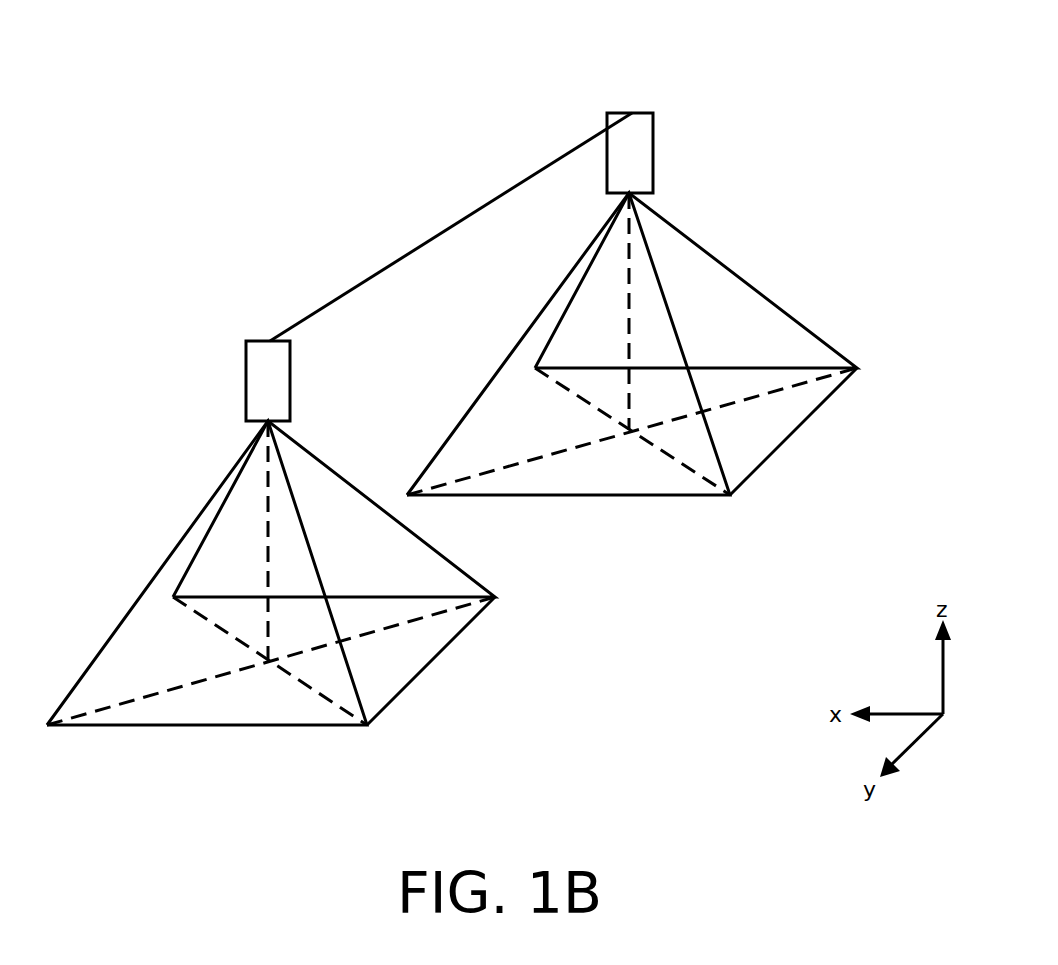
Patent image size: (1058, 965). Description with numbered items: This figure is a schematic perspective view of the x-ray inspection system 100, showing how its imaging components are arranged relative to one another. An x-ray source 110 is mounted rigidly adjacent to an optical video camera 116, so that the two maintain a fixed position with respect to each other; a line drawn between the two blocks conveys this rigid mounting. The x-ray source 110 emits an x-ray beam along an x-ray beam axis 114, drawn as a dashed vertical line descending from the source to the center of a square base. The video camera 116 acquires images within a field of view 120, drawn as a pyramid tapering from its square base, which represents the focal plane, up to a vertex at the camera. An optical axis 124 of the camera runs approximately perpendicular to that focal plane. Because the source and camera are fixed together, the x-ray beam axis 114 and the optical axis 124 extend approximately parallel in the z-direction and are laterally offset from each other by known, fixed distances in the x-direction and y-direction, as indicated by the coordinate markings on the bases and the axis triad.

The x-ray inspection system 100 is at (895, 62).
The x-ray source 110 is at (653, 155).
The x-ray beam axis 114 is at (633, 268).
The optical video camera 116 is at (246, 383).
The field of view 120 is at (184, 538).
The optical axis 124 is at (268, 487).